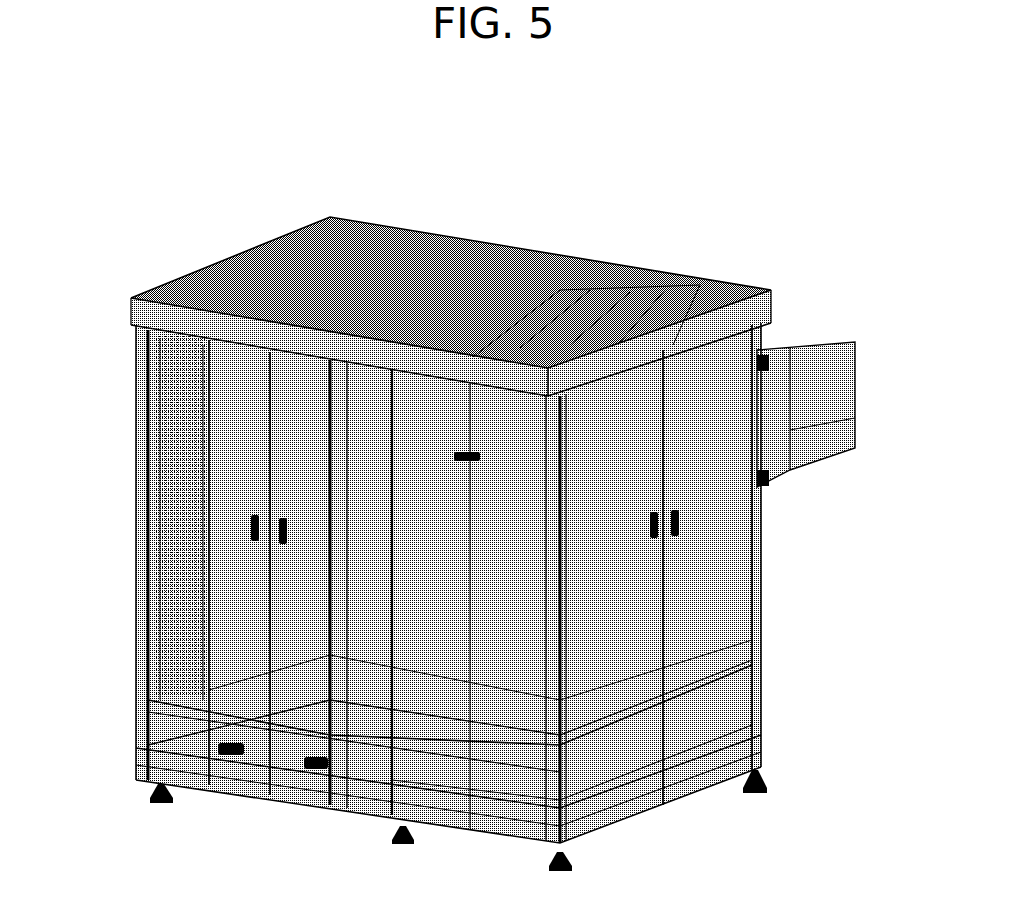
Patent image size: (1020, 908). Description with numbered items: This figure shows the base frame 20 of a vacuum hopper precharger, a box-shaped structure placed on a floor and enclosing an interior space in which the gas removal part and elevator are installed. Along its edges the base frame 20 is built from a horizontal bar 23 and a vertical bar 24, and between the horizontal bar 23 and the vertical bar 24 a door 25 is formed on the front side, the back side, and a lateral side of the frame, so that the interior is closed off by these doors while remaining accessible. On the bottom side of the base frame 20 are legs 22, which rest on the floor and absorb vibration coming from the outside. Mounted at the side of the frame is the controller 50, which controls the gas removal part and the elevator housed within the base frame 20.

The base frame 20 is at (439, 487).
The legs 22 is at (148, 790).
The horizontal bar 23 is at (203, 787).
The vertical bar 24 is at (135, 628).
The door 25 is at (493, 836).
The controller 50 is at (862, 346).